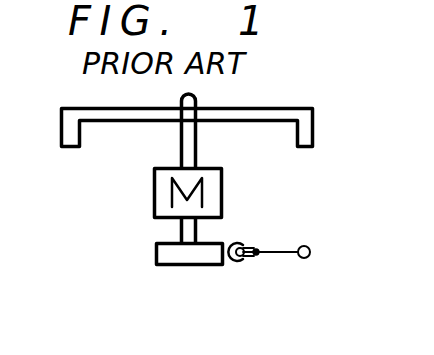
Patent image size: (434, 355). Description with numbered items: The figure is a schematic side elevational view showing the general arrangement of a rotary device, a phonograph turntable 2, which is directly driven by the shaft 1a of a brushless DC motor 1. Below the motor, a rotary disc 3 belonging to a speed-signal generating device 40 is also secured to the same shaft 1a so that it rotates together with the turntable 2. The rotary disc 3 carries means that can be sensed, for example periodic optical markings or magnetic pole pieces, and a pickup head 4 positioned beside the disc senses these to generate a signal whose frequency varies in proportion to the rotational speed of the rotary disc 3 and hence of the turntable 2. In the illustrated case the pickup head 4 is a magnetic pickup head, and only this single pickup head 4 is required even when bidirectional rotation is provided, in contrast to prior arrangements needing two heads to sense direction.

The DC motor 1 is at (153, 197).
The shaft 1a is at (180, 140).
The phonograph turntable 2 is at (281, 180).
The rotary disc 3 is at (156, 252).
The pickup head 4 is at (243, 325).
The speed-signal generating device 40 is at (146, 330).